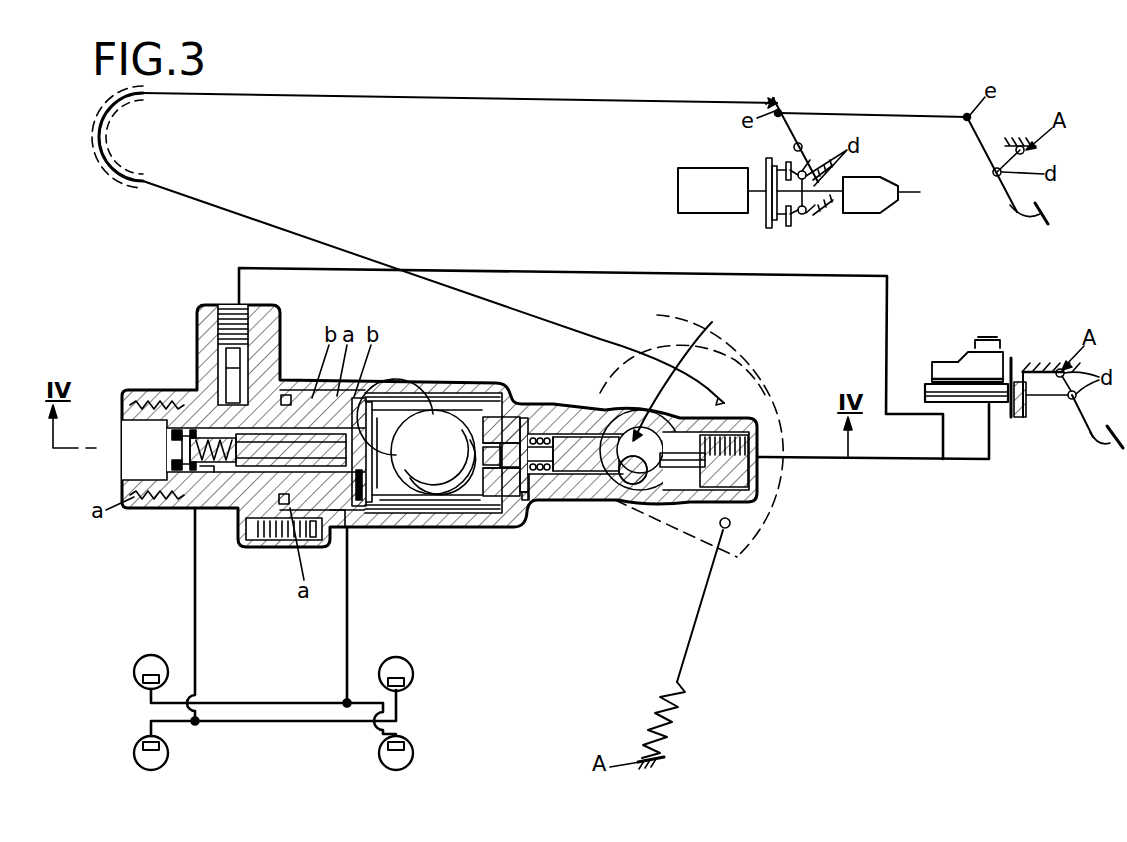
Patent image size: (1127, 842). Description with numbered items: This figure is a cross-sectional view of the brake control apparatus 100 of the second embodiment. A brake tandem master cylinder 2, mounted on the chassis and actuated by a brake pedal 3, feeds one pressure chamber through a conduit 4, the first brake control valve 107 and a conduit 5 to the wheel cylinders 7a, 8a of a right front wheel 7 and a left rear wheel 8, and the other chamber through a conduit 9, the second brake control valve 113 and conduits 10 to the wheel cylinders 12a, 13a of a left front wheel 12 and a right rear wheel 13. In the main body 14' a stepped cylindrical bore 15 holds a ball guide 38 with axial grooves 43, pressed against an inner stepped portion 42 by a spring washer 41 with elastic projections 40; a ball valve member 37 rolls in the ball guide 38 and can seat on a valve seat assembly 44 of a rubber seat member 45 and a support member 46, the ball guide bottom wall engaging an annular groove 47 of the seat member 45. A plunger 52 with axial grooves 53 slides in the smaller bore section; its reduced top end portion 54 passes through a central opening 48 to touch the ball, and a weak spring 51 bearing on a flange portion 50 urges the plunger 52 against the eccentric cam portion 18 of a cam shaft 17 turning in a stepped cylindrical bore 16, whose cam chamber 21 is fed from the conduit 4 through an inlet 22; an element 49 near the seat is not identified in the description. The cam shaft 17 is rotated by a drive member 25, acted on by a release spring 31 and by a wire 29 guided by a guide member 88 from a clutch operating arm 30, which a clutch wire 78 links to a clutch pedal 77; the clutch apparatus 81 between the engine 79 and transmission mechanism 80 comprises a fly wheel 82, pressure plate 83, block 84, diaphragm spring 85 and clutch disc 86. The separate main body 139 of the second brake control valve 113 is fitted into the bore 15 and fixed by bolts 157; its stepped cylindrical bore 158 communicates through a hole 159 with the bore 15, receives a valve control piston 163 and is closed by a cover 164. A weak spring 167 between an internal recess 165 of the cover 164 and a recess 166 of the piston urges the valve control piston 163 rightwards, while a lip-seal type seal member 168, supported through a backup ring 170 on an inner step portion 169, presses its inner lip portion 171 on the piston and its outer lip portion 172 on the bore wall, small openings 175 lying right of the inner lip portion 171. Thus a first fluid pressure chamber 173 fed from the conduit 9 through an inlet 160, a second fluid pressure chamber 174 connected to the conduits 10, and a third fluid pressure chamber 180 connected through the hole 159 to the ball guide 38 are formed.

The brake tandem master cylinder 2 is at (1008, 359).
The brake pedal 3 is at (1100, 442).
The conduit 4 is at (944, 462).
The conduit 5 is at (345, 672).
The right front wheel 7 is at (140, 665).
The wheel cylinder 7a is at (158, 678).
The left rear wheel 8 is at (382, 754).
The wheel cylinder 8a is at (412, 751).
The conduit 9 is at (892, 300).
The conduit 10 is at (197, 672).
The left front wheel 12 is at (136, 750).
The wheel cylinder 12a is at (160, 747).
The right rear wheel 13 is at (382, 664).
The wheel cylinder 13a is at (405, 678).
The main body 14' is at (433, 407).
The stepped cylindrical bore 15 is at (374, 395).
The stepped cylindrical bore 16 is at (660, 440).
The cam shaft 17 is at (690, 433).
The cam portion 18 is at (740, 450).
The cam chamber 21 is at (684, 376).
The inlet 22 is at (765, 448).
The drive member 25 is at (735, 338).
The wire 29 is at (248, 218).
The clutch operating arm 30 is at (788, 134).
The release spring 31 is at (670, 730).
The ball valve member 37 is at (447, 447).
The ball guide 38 is at (403, 395).
The elastic projections 40 is at (390, 483).
The spring washer 41 is at (358, 497).
The inner stepped portion 42 is at (503, 414).
The grooves 43 is at (424, 395).
The valve seat assembly 44 is at (478, 483).
The seat member 45 is at (470, 520).
The support member 46 is at (522, 500).
The annular groove 47 is at (502, 512).
The central opening 48 is at (520, 425).
The spring 49 is at (531, 423).
The flange portion 50 is at (531, 500).
The spring 51 is at (540, 432).
The plunger 52 is at (590, 500).
The axial grooves 53 is at (622, 505).
The top end portion 54 is at (552, 500).
The clutch pedal 77 is at (1018, 213).
The clutch wire 78 is at (840, 112).
The engine 79 is at (692, 214).
The transmission mechanism 80 is at (870, 213).
The clutch apparatus 81 is at (874, 167).
The fly wheel 82 is at (767, 213).
The pressure plate 83 is at (788, 224).
The block 84 is at (824, 212).
The diaphragm spring 85 is at (802, 214).
The clutch disc 86 is at (773, 210).
The guide member 88 is at (112, 158).
The brake control apparatus 100 is at (136, 298).
The first brake control valve 107 is at (562, 415).
The second brake control valve 113 is at (198, 312).
The main body 139 is at (299, 397).
The bolts 157 is at (280, 522).
The stepped cylindrical bore 158 is at (266, 518).
The hole 159 is at (338, 512).
The inlet 160 is at (218, 297).
The valve control piston 163 is at (312, 522).
The cover 164 is at (135, 455).
The internal recess 165 is at (124, 392).
The recess 166 is at (190, 437).
The spring 167 is at (190, 462).
The seal member 168 is at (208, 490).
The inner step portion 169 is at (262, 495).
The backup ring 170 is at (228, 483).
The inner lip portion 171 is at (172, 483).
The outer lip portion 172 is at (186, 488).
The first fluid pressure chamber 173 is at (254, 410).
The second fluid pressure chamber 174 is at (163, 417).
The small openings 175 is at (192, 413).
The third fluid pressure chamber 180 is at (358, 393).